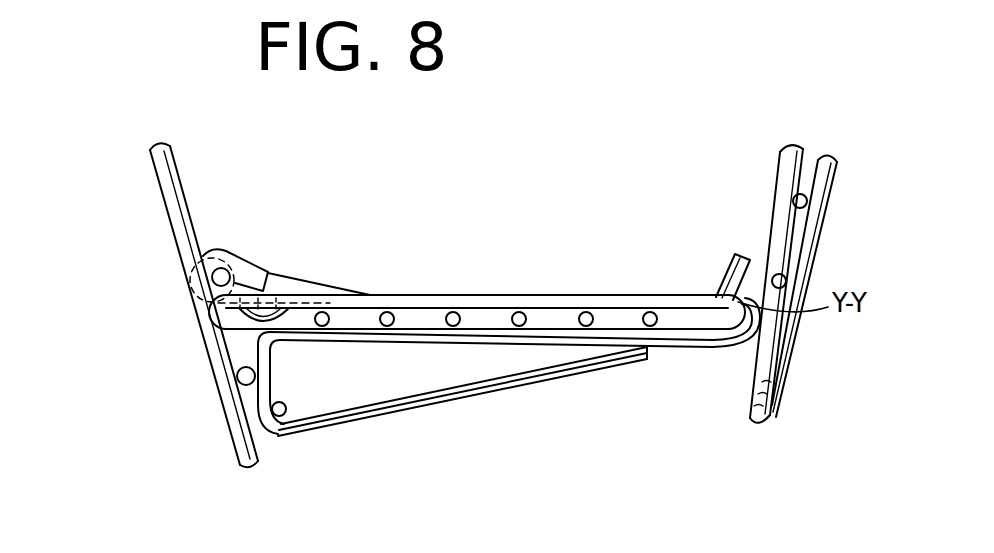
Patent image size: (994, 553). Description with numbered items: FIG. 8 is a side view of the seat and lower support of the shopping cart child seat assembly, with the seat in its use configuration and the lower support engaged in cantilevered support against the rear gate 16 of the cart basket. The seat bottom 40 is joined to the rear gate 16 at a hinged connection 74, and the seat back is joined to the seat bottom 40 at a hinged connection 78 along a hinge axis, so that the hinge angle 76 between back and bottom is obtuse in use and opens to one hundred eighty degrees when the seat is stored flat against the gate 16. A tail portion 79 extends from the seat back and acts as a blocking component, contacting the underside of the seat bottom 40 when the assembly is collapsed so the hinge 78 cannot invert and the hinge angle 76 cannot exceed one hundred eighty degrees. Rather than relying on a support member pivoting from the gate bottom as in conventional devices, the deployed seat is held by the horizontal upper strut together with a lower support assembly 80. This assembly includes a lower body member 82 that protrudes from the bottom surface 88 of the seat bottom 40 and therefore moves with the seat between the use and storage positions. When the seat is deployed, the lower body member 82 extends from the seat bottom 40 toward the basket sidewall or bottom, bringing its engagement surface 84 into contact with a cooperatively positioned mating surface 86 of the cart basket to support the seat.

The rear gate 16 is at (177, 201).
The seat bottom 40 is at (477, 301).
The hinged connection 74 is at (160, 338).
The hinge angle 76 is at (489, 287).
The hinged connection 78 is at (732, 342).
The tail portion 79 is at (763, 393).
The lower support assembly 80 is at (509, 404).
The lower body member 82 is at (551, 372).
The engagement surface 84 is at (273, 424).
The mating surface 86 is at (255, 386).
The bottom surface 88 is at (323, 312).